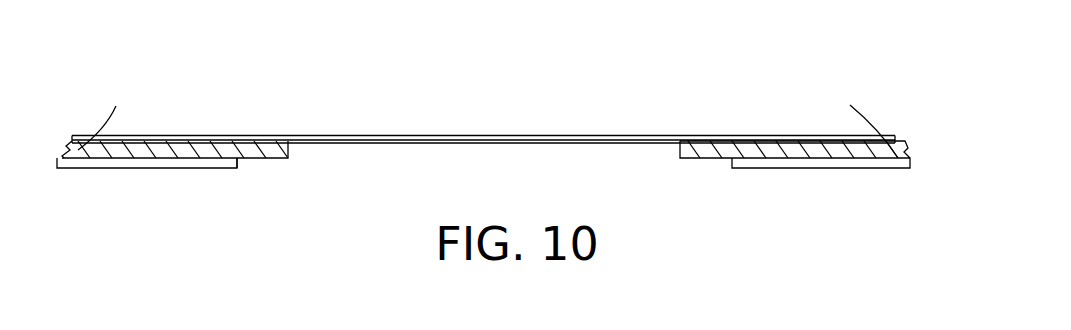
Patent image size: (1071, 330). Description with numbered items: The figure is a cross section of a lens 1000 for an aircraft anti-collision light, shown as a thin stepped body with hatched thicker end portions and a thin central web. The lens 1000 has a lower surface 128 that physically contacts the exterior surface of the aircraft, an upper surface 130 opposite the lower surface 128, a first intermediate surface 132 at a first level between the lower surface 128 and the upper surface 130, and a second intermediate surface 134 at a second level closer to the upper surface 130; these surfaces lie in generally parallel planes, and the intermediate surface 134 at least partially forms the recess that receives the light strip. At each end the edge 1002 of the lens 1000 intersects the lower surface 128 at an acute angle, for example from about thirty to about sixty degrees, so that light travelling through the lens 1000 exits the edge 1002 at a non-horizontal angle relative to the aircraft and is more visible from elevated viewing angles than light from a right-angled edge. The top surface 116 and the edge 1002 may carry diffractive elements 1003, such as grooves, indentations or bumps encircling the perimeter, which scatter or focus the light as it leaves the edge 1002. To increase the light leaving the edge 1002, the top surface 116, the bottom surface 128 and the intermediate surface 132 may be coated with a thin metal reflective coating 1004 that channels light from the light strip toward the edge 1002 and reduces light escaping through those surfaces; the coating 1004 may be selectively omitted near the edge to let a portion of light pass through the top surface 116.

The lens 1000 is at (658, 50).
The edge 1002 is at (64, 134).
The diffractive elements 1003 is at (163, 146).
The reflective coating 1004 is at (488, 134).
The top surface 116 is at (207, 136).
The lower surface 128 is at (163, 167).
The upper surface 130 is at (777, 136).
The first intermediate surface 132 is at (267, 162).
The second intermediate surface 134 is at (535, 147).